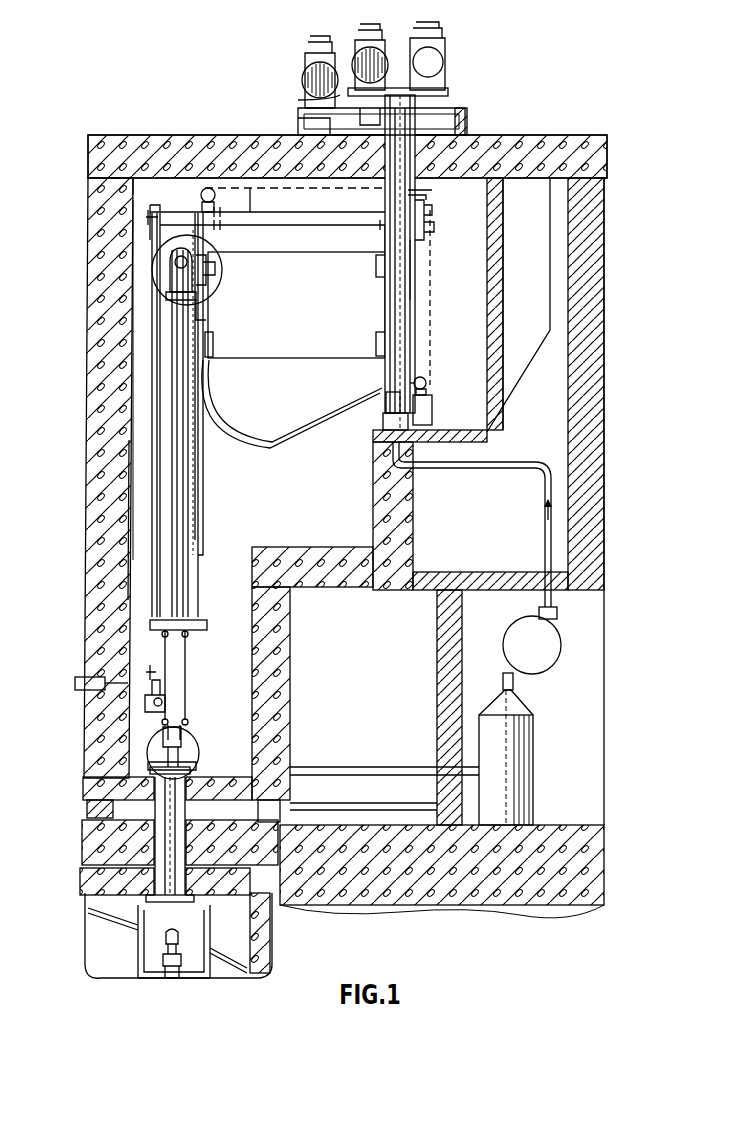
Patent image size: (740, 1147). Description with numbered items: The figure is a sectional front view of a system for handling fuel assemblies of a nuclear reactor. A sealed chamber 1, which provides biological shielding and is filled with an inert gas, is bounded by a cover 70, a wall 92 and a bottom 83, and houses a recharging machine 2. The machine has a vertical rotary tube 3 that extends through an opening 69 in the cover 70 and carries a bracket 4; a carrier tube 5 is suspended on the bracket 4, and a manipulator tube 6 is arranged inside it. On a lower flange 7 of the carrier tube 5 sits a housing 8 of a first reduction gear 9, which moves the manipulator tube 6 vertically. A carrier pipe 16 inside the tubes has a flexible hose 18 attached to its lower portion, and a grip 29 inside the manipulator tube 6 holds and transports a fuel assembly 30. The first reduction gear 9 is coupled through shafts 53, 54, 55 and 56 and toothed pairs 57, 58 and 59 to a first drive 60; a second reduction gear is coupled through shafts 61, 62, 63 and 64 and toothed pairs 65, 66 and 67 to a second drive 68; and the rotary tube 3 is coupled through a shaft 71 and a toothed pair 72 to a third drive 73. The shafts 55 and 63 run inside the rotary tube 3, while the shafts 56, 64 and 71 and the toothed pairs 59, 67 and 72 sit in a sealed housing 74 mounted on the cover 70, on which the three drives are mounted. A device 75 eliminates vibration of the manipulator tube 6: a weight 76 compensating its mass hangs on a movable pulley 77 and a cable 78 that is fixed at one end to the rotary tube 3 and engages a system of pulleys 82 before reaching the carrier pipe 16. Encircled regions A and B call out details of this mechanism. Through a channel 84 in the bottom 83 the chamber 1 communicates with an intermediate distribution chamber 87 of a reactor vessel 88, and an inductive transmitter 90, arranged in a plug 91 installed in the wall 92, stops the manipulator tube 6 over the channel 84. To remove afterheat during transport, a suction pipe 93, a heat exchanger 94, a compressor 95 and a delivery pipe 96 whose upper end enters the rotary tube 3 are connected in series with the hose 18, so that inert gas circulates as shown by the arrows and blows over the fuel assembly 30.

The sealed chamber 1 is at (540, 133).
The recharging machine 2 is at (186, 192).
The vertical rotary tube 3 is at (428, 380).
The bracket 4 is at (315, 410).
The carrier tube 5 is at (98, 355).
The manipulator tube 6 is at (170, 428).
The lower flange 7 is at (195, 633).
The housing 8 is at (178, 665).
The first reduction gear 9 is at (188, 703).
The carrier pipe 16 is at (200, 295).
The flexible hose 18 is at (266, 450).
The grip 29 is at (150, 745).
The fuel assembly 30 is at (168, 965).
The shaft 53 is at (150, 485).
The shaft 54 is at (250, 188).
The shaft 55 is at (425, 195).
The shaft 56 is at (335, 125).
The toothed pair 57 is at (148, 200).
The toothed pair 58 is at (425, 232).
The toothed pair 59 is at (390, 100).
The first drive 60 is at (360, 60).
The shaft 61 is at (160, 238).
The shaft 62 is at (275, 236).
The shaft 63 is at (385, 228).
The shaft 64 is at (450, 98).
The toothed pair 65 is at (185, 222).
The toothed pair 66 is at (414, 262).
The toothed pair 67 is at (420, 132).
The second drive 68 is at (432, 62).
The opening 69 is at (380, 196).
The cover 70 is at (150, 140).
The shaft 71 is at (318, 102).
The toothed pair 72 is at (330, 212).
The third drive 73 is at (315, 75).
The sealed housing 74 is at (470, 125).
The device to eliminate vibration 75 is at (432, 392).
The weight 76 is at (434, 408).
The movable pulley 77 is at (386, 378).
The cable 78 is at (205, 268).
The system of pulleys 82 is at (208, 188).
The bottom 83 is at (240, 775).
The channel 84 is at (160, 832).
The intermediate distribution chamber 87 is at (152, 942).
The reactor vessel 88 is at (92, 933).
The inductive transmitter 90 is at (128, 685).
The plug 91 is at (80, 683).
The wall 92 is at (92, 545).
The suction pipe 93 is at (384, 763).
The heat exchanger 94 is at (500, 790).
The compressor 95 is at (546, 662).
The delivery pipe 96 is at (530, 465).
The detail A is at (150, 300).
The detail B is at (150, 745).